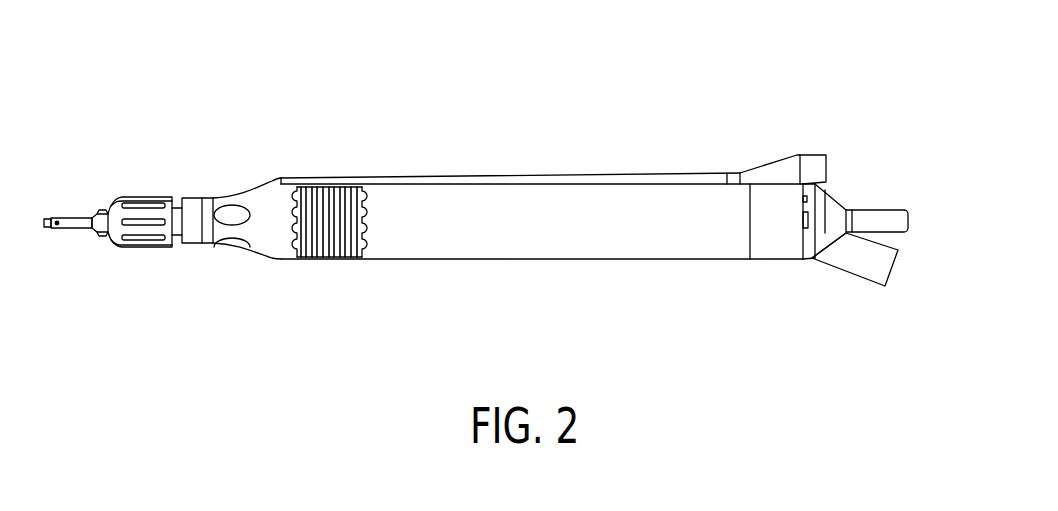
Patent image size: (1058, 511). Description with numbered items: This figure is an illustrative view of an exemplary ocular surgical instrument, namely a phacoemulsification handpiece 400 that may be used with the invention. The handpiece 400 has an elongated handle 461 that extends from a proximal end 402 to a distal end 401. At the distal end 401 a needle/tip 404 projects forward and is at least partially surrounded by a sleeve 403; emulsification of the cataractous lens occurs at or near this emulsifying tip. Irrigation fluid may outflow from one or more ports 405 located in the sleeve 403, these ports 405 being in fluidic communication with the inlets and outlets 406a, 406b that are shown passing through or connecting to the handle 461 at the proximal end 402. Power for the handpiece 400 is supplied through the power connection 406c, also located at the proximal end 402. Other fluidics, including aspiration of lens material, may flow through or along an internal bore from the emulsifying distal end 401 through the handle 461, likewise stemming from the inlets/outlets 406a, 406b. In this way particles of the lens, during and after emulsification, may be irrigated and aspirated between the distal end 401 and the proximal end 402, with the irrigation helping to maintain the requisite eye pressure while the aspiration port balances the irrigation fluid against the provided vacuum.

The handpiece 400 is at (418, 106).
The distal end 401 is at (93, 200).
The proximal end 402 is at (758, 262).
The sleeve 403 is at (160, 224).
The needle/tip 404 is at (50, 215).
The port 405 is at (57, 231).
The handle 461 is at (385, 290).
The inlet/outlet 406a is at (815, 153).
The inlet/outlet 406b is at (900, 220).
The power connection 406c is at (835, 266).